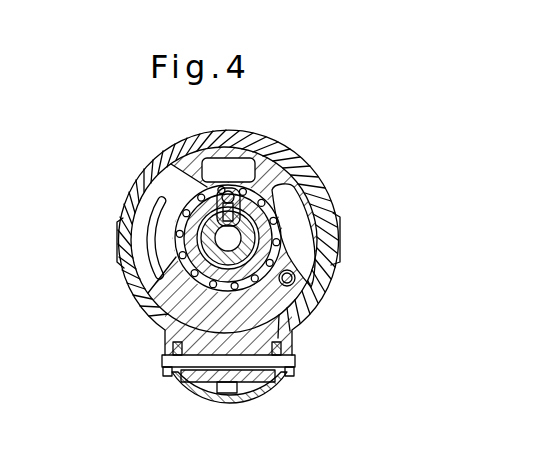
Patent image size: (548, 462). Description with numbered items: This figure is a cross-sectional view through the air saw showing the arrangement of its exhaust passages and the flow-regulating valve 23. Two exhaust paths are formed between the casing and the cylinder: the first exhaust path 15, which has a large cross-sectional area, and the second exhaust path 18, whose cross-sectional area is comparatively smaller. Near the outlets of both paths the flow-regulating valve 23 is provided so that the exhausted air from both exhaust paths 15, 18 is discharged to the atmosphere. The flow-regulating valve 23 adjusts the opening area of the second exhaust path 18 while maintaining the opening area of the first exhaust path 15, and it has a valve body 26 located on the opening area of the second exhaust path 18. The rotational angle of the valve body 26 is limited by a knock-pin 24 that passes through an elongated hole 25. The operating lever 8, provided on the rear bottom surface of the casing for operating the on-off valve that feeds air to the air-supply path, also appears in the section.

The operating lever 8 is at (201, 393).
The first exhaust path 15 is at (233, 170).
The second exhaust path 18 is at (160, 262).
The flow-regulating valve 23 is at (177, 183).
The knock-pin 24 is at (296, 283).
The elongated hole 25 is at (340, 238).
The valve body 26 is at (162, 306).